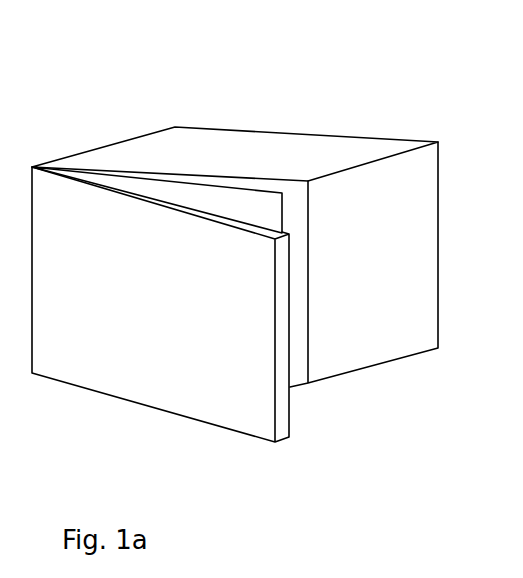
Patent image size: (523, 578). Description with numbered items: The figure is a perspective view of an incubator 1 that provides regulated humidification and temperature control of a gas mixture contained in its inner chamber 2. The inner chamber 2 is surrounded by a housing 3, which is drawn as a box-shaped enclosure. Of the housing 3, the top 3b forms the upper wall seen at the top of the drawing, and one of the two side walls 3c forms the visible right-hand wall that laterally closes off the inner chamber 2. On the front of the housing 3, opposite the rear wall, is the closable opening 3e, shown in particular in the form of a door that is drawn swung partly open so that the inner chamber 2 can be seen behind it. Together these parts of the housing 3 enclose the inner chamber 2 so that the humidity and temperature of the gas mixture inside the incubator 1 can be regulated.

The incubator 1 is at (53, 82).
The inner chamber 2 is at (157, 200).
The housing 3 is at (346, 143).
The top 3b is at (258, 147).
The side wall 3c is at (421, 222).
The closable opening 3e is at (165, 405).